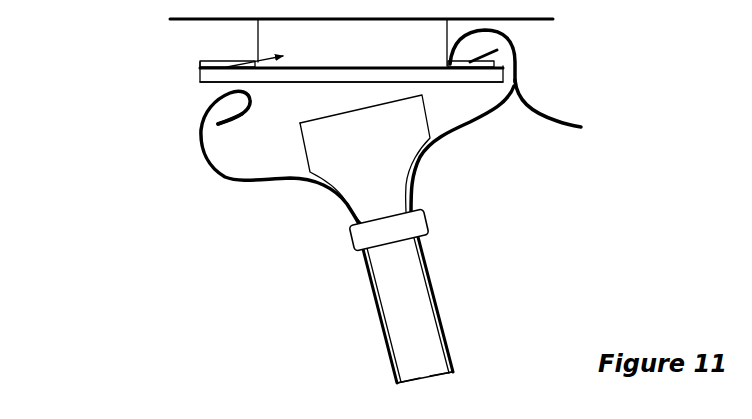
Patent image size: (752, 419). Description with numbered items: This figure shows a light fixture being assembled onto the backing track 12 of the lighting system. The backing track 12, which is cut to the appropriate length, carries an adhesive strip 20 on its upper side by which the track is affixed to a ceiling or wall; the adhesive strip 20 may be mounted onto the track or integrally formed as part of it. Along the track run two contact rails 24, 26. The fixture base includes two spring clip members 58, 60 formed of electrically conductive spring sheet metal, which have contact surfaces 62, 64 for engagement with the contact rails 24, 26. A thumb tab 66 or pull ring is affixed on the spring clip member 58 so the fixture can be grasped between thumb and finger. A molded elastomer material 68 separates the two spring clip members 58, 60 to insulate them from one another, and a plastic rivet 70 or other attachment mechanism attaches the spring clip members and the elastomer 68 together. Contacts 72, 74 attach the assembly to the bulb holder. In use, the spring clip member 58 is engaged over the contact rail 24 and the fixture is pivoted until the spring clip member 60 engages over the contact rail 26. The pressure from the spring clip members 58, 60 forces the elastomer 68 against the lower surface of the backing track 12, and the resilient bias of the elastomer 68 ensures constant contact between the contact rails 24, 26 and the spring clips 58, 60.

The backing track 12 is at (195, 73).
The adhesive strip 20 is at (196, 73).
The contact rail 24 is at (503, 62).
The contact rail 26 is at (229, 61).
The spring clip member 58 is at (507, 42).
The spring clip member 60 is at (197, 130).
The contact surface 62 is at (504, 84).
The contact surface 64 is at (218, 126).
The thumb tab 66 is at (557, 110).
The molded elastomer material 68 is at (412, 332).
The plastic rivet 70 is at (346, 230).
The contact 72 is at (454, 373).
The contact 74 is at (398, 384).